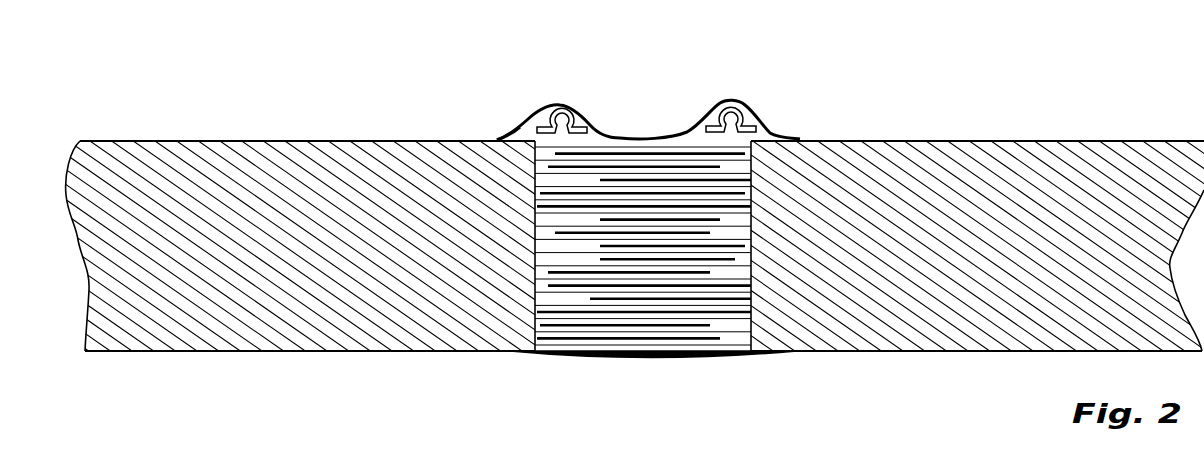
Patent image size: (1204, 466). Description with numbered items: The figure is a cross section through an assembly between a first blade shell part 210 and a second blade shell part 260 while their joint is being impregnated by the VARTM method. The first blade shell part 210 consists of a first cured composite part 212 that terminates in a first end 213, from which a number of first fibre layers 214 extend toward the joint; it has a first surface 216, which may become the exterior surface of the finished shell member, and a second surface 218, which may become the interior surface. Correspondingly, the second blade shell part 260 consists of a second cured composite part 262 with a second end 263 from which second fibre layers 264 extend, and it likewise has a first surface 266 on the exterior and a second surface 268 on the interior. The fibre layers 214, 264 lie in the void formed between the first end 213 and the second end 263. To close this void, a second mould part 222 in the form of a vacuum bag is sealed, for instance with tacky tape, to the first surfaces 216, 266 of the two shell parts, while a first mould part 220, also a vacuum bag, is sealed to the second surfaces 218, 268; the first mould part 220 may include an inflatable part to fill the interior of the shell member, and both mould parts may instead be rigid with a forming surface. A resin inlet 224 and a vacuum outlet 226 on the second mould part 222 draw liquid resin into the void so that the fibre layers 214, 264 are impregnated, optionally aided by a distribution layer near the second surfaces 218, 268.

The first blade shell part 210 is at (215, 98).
The first cured composite part 212 is at (242, 321).
The first end 213 is at (543, 145).
The first fibre layers 214 is at (543, 303).
The first surface 216 is at (400, 141).
The second surface 218 is at (350, 351).
The first mould part 220 is at (645, 356).
The second mould part 222 is at (527, 128).
The resin inlet 224 is at (592, 115).
The vacuum outlet 226 is at (752, 125).
The second blade shell part 260 is at (961, 80).
The second cured composite part 262 is at (827, 351).
The second end 263 is at (750, 335).
The second fibre layers 264 is at (718, 313).
The first surface 266 is at (1035, 141).
The second surface 268 is at (952, 351).